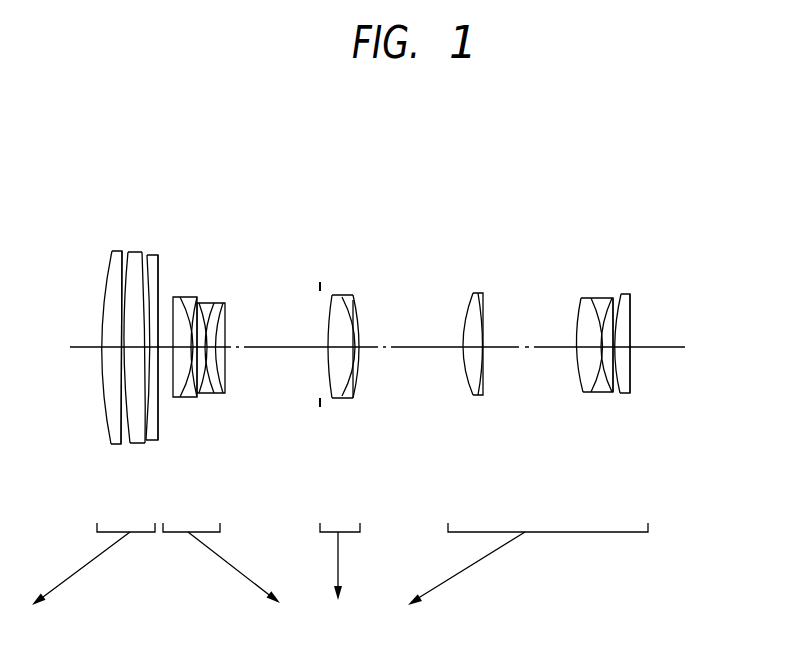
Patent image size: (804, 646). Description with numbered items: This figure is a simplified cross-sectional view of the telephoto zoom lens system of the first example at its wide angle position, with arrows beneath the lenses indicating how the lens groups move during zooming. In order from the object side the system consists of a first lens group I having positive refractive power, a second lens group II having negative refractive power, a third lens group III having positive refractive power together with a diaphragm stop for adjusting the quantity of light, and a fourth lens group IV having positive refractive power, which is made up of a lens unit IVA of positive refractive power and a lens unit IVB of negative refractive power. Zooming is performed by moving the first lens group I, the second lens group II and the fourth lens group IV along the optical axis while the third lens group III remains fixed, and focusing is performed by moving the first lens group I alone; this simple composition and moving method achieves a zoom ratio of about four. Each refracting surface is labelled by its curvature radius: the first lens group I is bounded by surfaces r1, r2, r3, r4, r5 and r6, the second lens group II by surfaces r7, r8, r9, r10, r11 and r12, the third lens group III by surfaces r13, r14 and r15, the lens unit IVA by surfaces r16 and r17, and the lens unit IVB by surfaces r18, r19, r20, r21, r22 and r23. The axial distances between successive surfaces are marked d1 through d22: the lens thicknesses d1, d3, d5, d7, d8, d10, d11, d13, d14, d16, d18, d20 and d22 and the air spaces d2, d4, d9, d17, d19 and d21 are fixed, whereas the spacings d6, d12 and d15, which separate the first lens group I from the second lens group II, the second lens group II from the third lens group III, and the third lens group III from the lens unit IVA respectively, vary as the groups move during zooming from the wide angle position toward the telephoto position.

The first lens group I is at (163, 132).
The second lens group II is at (233, 132).
The third lens group III is at (312, 132).
The fourth lens group IV is at (645, 128).
The lens unit IVA is at (473, 167).
The lens unit IVB is at (637, 167).
The curvature radius of surface 1 r1 is at (110, 248).
The curvature radius of surface 2 r2 is at (127, 250).
The curvature radius of surface 3 r3 is at (143, 251).
The curvature radius of surface 4 r4 is at (152, 257).
The curvature radius of surface 5 r5 is at (163, 261).
The curvature radius of surface 6 r6 is at (171, 297).
The curvature radius of surface 7 r7 is at (185, 298).
The curvature radius of surface 8 r8 is at (204, 302).
The curvature radius of surface 9 r9 is at (212, 302).
The curvature radius of surface 10 r10 is at (220, 304).
The curvature radius of surface 11 r11 is at (224, 315).
The curvature radius of surface 12 r12 is at (333, 296).
The curvature radius of surface 13 r13 is at (345, 296).
The curvature radius of surface 14 r14 is at (357, 302).
The curvature radius of surface 15 r15 is at (359, 305).
The curvature radius of surface 16 r16 is at (473, 294).
The curvature radius of surface 17 r17 is at (486, 298).
The curvature radius of surface 18 r18 is at (580, 299).
The curvature radius of surface 19 r19 is at (590, 299).
The curvature radius of surface 20 r20 is at (608, 298).
The curvature radius of surface 21 r21 is at (613, 298).
The curvature radius of surface 22 r22 is at (622, 295).
The curvature radius of surface 23 r23 is at (631, 298).
The distance between surfaces 1 and 2 d1 is at (110, 348).
The distance between surfaces 2 and 3 d2 is at (123, 348).
The distance between surfaces 3 and 4 d3 is at (141, 348).
The distance between surfaces 4 and 5 d4 is at (149, 348).
The distance between surfaces 5 and 6 d5 is at (156, 348).
The distance between surfaces 6 and 7 d6 is at (165, 348).
The distance between surfaces 7 and 8 d7 is at (180, 348).
The distance between surfaces 8 and 9 d8 is at (193, 348).
The distance between surfaces 9 and 10 d9 is at (205, 348).
The distance between surfaces 10 and 11 d10 is at (216, 348).
The distance between surfaces 11 and 12 d11 is at (275, 348).
The distance between surfaces 12 and 13 d12 is at (338, 348).
The distance between surfaces 13 and 14 d13 is at (355, 348).
The distance between surfaces 14 and 15 d14 is at (360, 348).
The distance between surfaces 15 and 16 d15 is at (410, 348).
The distance between surfaces 16 and 17 d16 is at (479, 348).
The distance between surfaces 17 and 18 d17 is at (548, 348).
The distance between surfaces 18 and 19 d18 is at (576, 348).
The distance between surfaces 19 and 20 d19 is at (591, 348).
The distance between surfaces 20 and 21 d20 is at (601, 348).
The distance between surfaces 21 and 22 d21 is at (614, 348).
The distance between surfaces 22 and 23 d22 is at (629, 348).